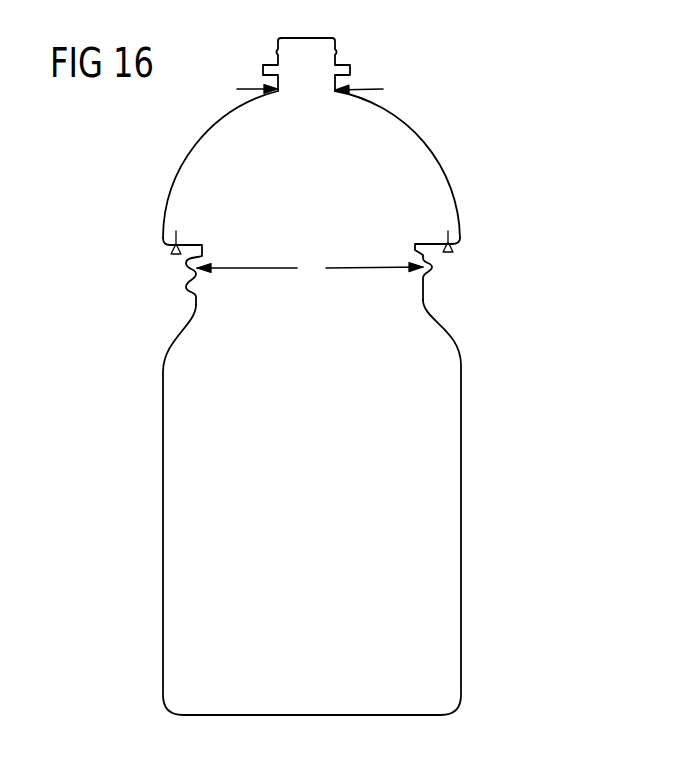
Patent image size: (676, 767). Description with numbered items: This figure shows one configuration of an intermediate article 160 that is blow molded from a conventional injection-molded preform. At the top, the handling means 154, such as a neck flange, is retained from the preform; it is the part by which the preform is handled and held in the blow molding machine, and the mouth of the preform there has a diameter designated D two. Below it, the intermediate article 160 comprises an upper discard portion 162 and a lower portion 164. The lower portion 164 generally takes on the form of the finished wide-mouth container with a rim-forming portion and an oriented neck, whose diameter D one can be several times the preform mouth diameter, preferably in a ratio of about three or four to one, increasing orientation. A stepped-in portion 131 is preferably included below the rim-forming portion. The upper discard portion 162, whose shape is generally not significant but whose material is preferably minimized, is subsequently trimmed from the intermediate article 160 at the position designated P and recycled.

The intermediate article 160 is at (465, 84).
The handling means 154 is at (362, 62).
The upper discard portion 162 is at (447, 173).
The stepped-in portion 131 is at (436, 256).
The lower portion 164 is at (461, 377).